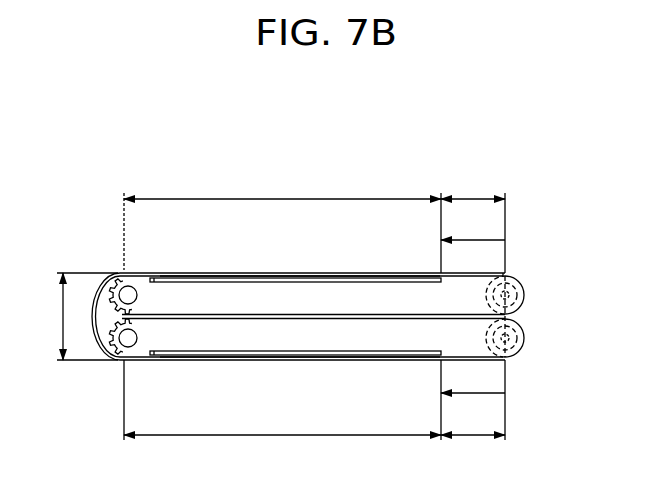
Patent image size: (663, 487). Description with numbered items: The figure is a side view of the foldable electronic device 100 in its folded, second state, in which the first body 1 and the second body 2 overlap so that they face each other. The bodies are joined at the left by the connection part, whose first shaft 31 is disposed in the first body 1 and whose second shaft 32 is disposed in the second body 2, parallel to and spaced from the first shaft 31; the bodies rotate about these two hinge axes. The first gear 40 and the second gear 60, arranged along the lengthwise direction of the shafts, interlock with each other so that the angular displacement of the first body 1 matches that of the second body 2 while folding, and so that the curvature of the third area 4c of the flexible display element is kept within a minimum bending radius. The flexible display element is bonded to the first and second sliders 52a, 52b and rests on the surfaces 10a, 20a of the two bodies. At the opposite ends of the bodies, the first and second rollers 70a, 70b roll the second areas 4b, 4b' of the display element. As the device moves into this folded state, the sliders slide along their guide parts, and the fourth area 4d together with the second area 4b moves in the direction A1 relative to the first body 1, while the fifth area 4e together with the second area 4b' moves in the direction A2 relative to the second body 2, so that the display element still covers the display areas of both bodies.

The foldable electronic device 100 is at (582, 150).
The first body 1 is at (467, 293).
The second body 2 is at (471, 333).
The surface of the first body 10a is at (400, 276).
The surface of the second body 20a is at (472, 361).
The first shaft 31 is at (130, 295).
The second shaft 32 is at (130, 339).
The first gear 40 is at (112, 288).
The first slider 52a is at (225, 278).
The second slider 52b is at (237, 355).
The second gear 60 is at (104, 349).
The first roller 70a is at (524, 296).
The second roller 70b is at (524, 340).
The second area 4b is at (473, 264).
The second area 4b' is at (473, 411).
The third area 4c is at (75, 316).
The fourth area 4d is at (282, 222).
The fifth area 4e is at (282, 410).
The direction A1 is at (473, 226).
The direction A2 is at (473, 406).